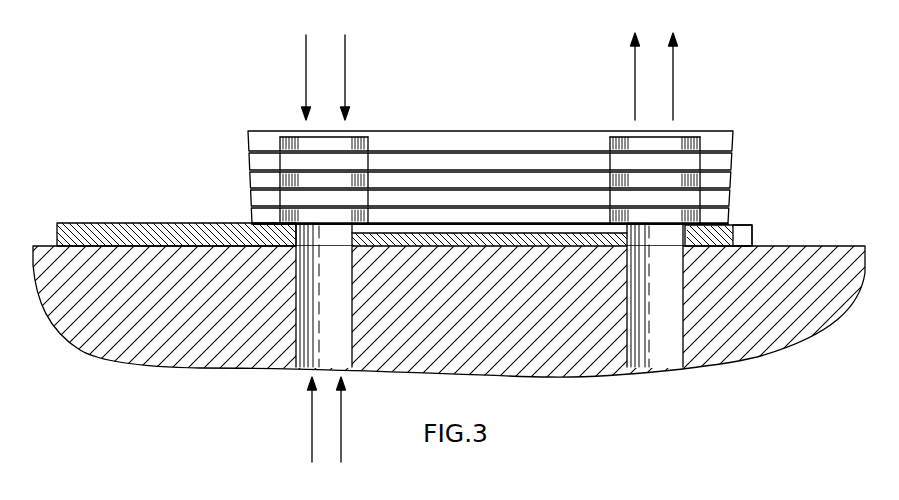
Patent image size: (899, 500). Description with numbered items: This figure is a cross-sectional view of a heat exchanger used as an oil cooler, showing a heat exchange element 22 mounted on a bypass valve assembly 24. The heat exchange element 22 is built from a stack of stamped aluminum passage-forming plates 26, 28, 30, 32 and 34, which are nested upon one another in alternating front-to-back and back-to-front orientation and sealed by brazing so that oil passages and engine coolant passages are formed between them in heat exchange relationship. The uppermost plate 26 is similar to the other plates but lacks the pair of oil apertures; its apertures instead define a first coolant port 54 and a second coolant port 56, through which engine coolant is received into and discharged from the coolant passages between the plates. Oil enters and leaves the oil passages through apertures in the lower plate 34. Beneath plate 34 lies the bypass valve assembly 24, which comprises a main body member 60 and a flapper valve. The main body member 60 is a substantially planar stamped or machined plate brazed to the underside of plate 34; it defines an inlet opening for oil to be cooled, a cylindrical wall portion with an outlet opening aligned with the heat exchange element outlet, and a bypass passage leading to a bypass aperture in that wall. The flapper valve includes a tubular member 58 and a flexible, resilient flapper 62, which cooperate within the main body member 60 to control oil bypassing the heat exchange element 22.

The heat exchange element 22 is at (485, 149).
The bypass valve assembly 24 is at (98, 222).
The passage-forming plate 26 is at (245, 136).
The passage-forming plate 28 is at (246, 152).
The passage-forming plate 30 is at (246, 172).
The passage-forming plate 32 is at (246, 193).
The passage-forming plate 34 is at (246, 213).
The first coolant port 54 is at (283, 107).
The second coolant port 56 is at (612, 112).
The tubular member 58 is at (712, 240).
The main body member 60 is at (745, 226).
The flapper 62 is at (629, 233).